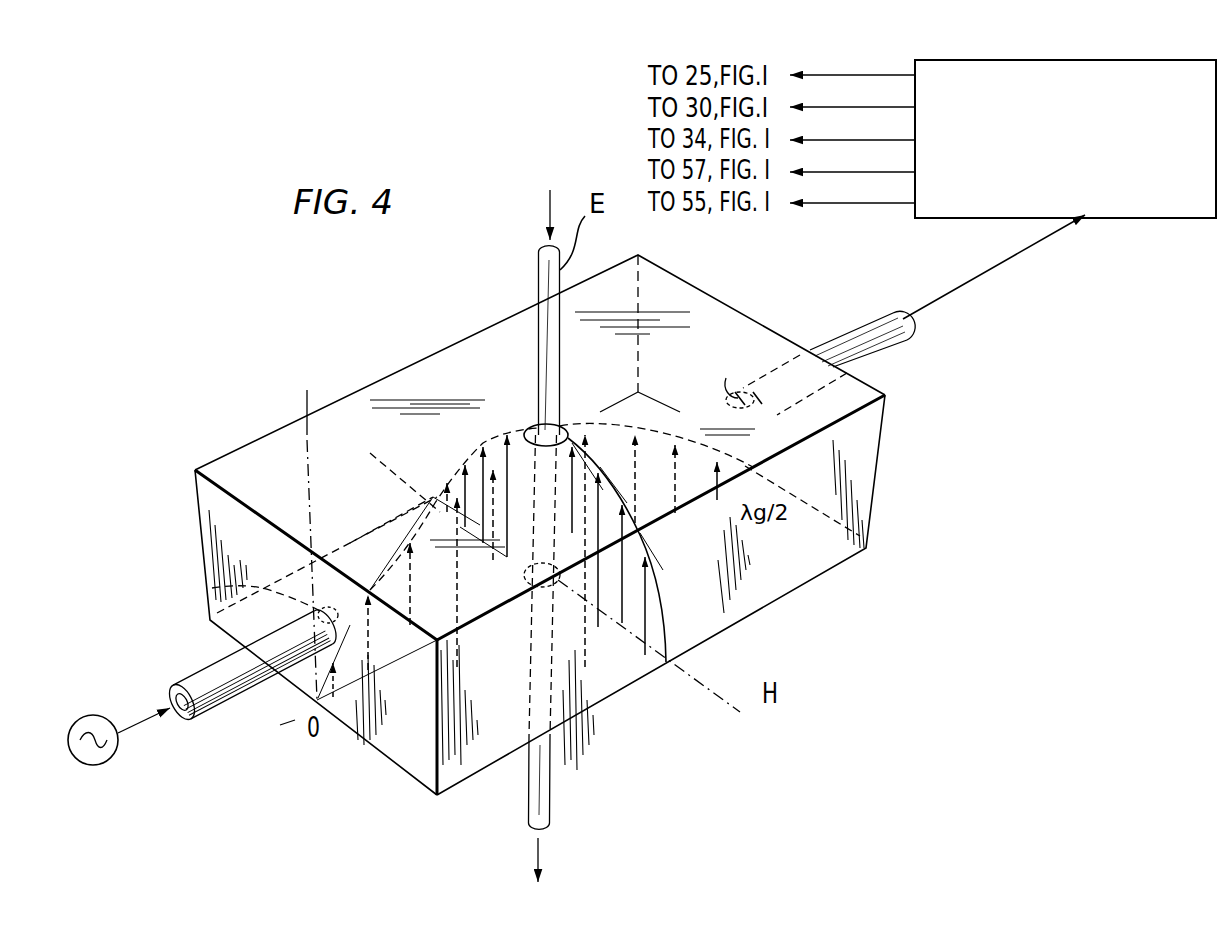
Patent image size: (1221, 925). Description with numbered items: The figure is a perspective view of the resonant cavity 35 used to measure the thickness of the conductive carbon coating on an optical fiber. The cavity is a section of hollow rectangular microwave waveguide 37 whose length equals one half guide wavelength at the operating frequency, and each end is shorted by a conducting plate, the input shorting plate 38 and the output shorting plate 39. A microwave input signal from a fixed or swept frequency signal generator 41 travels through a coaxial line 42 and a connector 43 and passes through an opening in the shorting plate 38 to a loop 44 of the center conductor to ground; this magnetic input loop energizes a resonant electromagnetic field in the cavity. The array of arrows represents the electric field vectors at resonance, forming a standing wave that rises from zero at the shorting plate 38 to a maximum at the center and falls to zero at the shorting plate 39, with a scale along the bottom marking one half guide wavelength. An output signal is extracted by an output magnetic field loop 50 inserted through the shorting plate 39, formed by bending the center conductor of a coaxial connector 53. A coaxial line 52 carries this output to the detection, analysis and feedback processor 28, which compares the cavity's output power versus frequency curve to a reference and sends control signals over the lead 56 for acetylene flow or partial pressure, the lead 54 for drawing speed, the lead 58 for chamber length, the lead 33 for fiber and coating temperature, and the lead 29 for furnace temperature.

The detection, analysis and feedback processor 28 is at (1158, 62).
The lead 29 is at (832, 74).
The lead 33 is at (853, 107).
The lead 58 is at (862, 140).
The lead 56 is at (866, 172).
The lead 54 is at (870, 204).
The coaxial line 52 is at (973, 286).
The coaxial connector 53 is at (848, 342).
The output magnetic field loop 50 is at (729, 392).
The hollow rectangular microwave waveguide 37 is at (472, 335).
The resonant cavity 35 is at (376, 382).
The input shorting plate 38 is at (200, 516).
The output shorting plate 39 is at (852, 472).
The connector 43 is at (204, 682).
The loop 44 is at (212, 588).
The signal generator 41 is at (100, 716).
The coaxial line 42 is at (150, 722).